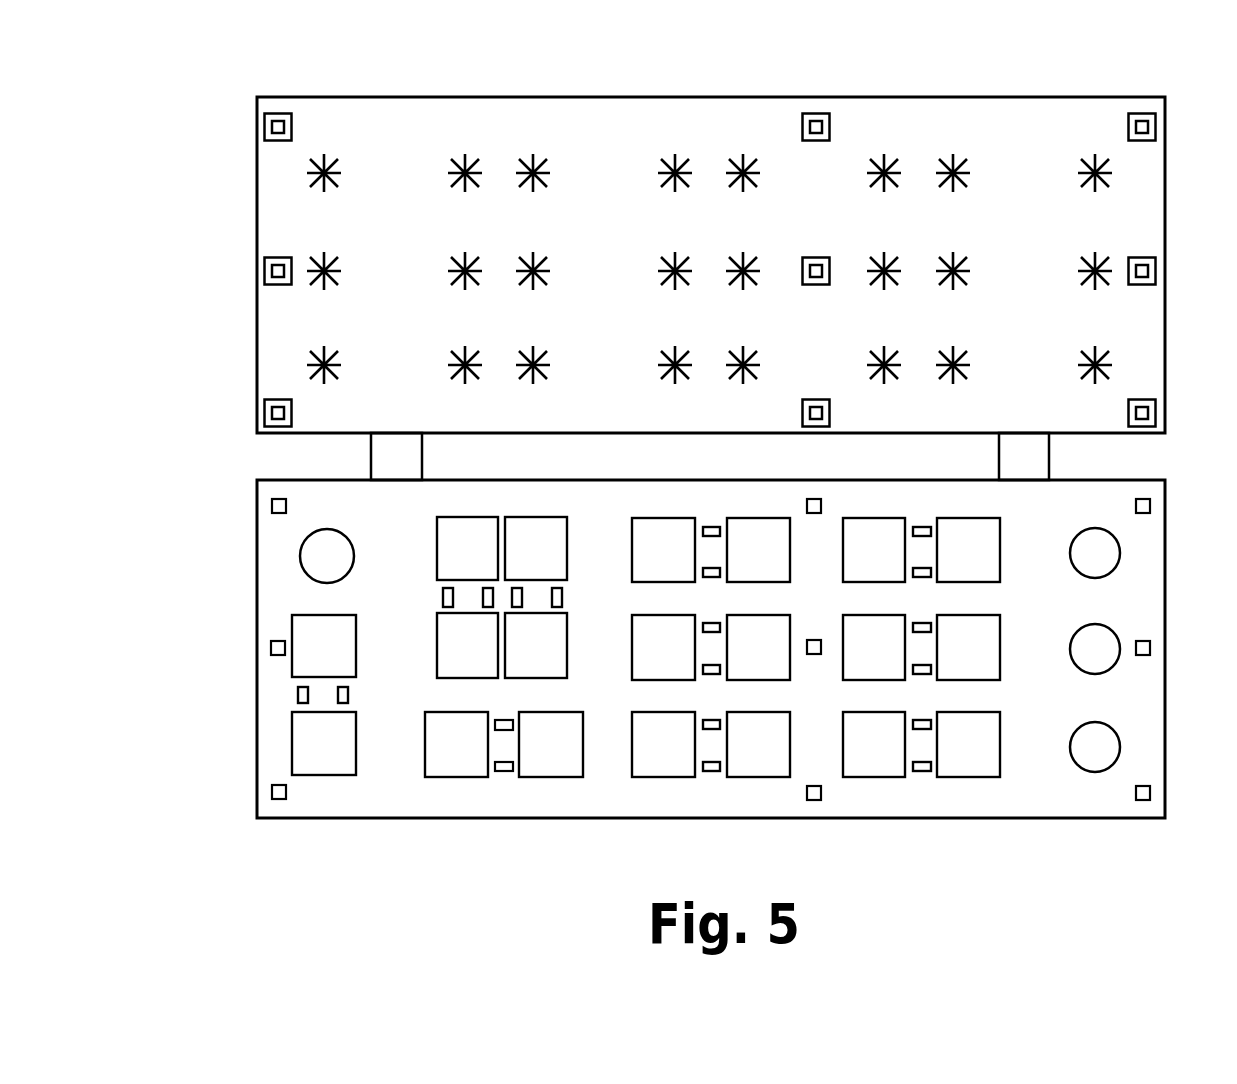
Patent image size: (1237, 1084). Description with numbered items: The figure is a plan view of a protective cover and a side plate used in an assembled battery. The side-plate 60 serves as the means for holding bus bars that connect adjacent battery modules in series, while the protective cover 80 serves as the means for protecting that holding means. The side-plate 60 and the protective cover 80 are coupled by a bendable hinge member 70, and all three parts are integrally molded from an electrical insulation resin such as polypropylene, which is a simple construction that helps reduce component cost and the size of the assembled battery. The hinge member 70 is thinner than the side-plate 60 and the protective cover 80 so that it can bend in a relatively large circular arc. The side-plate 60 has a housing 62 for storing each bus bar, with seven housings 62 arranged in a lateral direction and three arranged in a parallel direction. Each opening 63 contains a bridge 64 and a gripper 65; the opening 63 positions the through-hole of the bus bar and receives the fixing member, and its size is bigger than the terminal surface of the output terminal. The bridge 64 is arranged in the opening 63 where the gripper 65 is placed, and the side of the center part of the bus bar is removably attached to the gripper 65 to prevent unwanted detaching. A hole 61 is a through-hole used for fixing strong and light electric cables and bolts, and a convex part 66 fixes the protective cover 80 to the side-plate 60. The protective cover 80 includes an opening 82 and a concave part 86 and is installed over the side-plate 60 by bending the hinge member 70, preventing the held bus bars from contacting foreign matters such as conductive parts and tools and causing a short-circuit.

The side-plate 60 is at (257, 582).
The hole 61 is at (348, 539).
The housing 62 is at (516, 820).
The opening 63 is at (447, 777).
The bridge 64 is at (473, 799).
The gripper 65 is at (500, 772).
The convex part 66 is at (272, 791).
The hinge member 70 is at (371, 458).
The protective cover 80 is at (257, 335).
The opening 82 is at (308, 174).
The concave part 86 is at (278, 113).